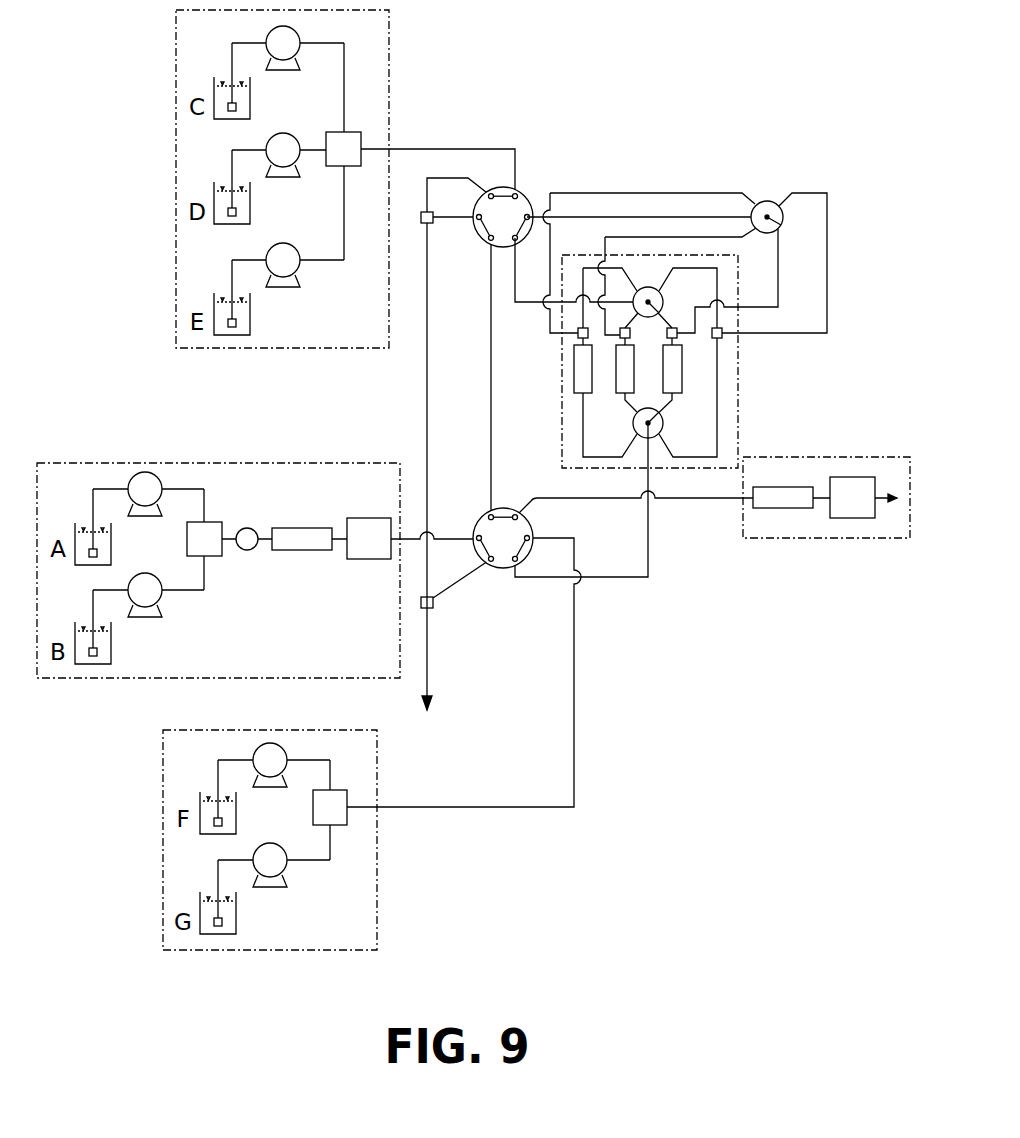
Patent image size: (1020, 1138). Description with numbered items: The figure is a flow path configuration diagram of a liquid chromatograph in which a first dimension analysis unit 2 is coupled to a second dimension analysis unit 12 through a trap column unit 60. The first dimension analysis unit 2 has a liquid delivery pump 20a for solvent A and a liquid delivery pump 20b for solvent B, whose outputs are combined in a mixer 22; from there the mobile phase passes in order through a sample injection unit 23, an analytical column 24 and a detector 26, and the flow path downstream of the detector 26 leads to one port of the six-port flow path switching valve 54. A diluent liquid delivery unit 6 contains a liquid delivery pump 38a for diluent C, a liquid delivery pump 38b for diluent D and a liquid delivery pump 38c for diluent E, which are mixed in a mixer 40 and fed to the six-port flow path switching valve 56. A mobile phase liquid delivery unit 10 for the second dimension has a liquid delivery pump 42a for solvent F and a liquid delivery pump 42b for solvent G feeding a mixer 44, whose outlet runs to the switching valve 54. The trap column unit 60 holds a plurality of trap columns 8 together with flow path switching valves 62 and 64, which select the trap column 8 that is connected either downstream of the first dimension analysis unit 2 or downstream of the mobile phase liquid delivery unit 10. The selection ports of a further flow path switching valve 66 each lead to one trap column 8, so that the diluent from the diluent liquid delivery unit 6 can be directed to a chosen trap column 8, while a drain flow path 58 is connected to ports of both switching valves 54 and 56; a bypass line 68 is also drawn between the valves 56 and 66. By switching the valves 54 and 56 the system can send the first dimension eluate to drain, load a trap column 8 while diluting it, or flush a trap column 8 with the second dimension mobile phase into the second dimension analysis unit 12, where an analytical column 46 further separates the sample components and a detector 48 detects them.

The first dimension analysis unit 2 is at (252, 462).
The diluent liquid delivery unit 6 is at (390, 43).
The trap column 8 is at (574, 370).
The mobile phase liquid delivery unit for second dimension analysis 10 is at (378, 916).
The second dimension analysis unit 12 is at (847, 455).
The liquid delivery pump 20a is at (146, 518).
The liquid delivery pump 20b is at (146, 620).
The mixer 22 is at (213, 557).
The sample injection unit 23 is at (256, 551).
The analytical column 24 is at (308, 552).
The detector 26 is at (367, 560).
The liquid delivery pump 38a is at (285, 73).
The liquid delivery pump 38b is at (286, 180).
The liquid delivery pump 38c is at (286, 290).
The mixer 40 is at (355, 130).
The liquid delivery pump 42a is at (272, 788).
The liquid delivery pump 42b is at (272, 888).
The mixer 44 is at (340, 827).
The analytical column 46 is at (780, 510).
The detector 48 is at (848, 519).
The flow path switching valve 54 is at (504, 569).
The flow path switching valve 56 is at (526, 192).
The drain flow path 58 is at (430, 468).
The trap column unit 60 is at (740, 364).
The flow path switching valve 62 is at (664, 302).
The flow path switching valve 64 is at (664, 424).
The flow path switching valve 66 is at (770, 200).
The bypass flow path 68 is at (682, 192).